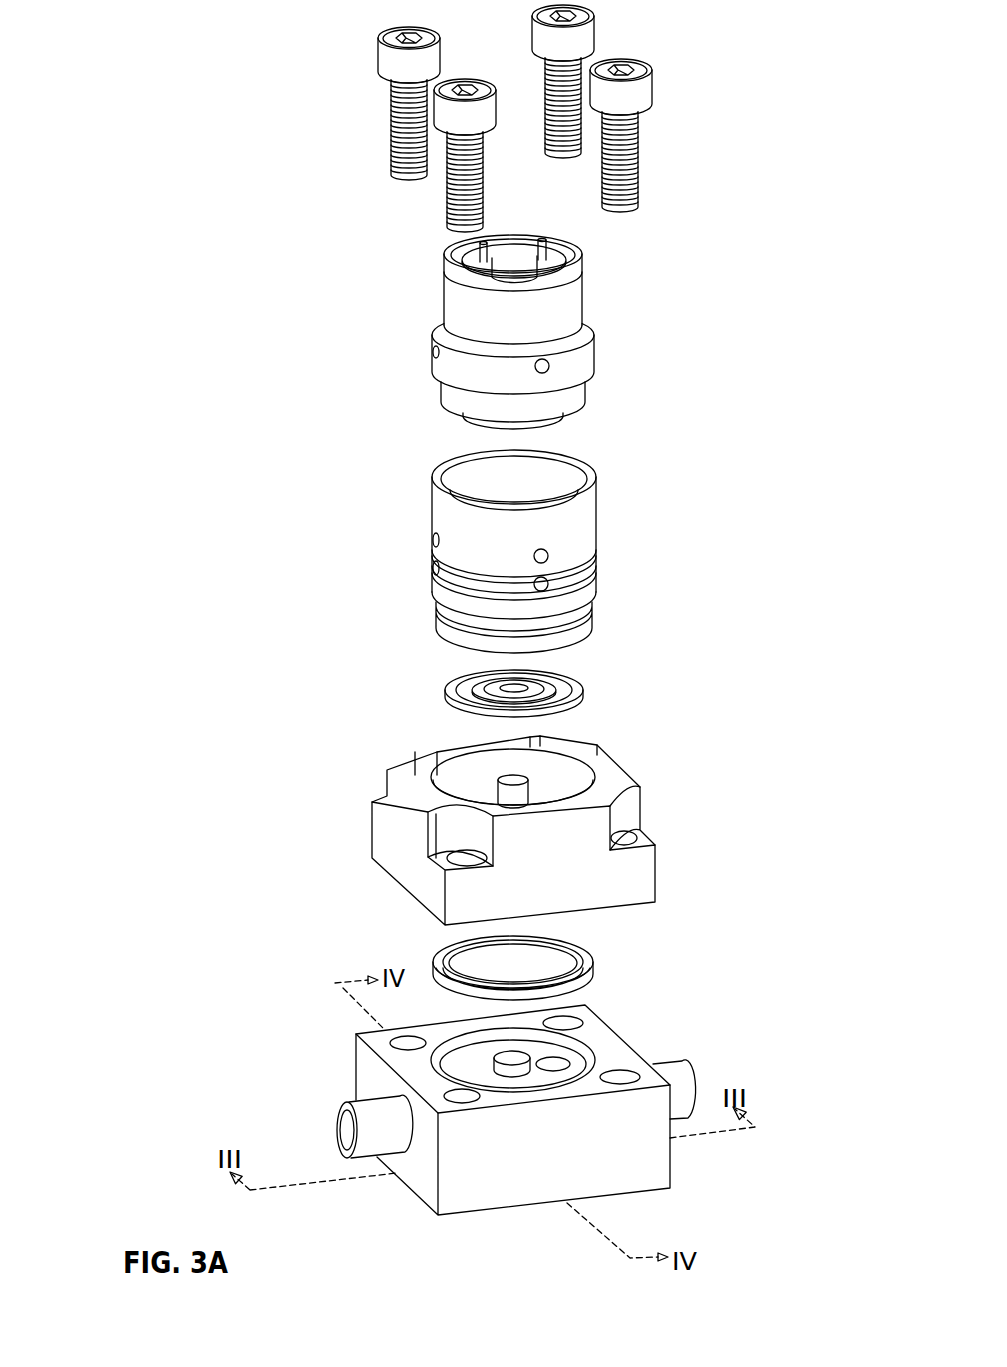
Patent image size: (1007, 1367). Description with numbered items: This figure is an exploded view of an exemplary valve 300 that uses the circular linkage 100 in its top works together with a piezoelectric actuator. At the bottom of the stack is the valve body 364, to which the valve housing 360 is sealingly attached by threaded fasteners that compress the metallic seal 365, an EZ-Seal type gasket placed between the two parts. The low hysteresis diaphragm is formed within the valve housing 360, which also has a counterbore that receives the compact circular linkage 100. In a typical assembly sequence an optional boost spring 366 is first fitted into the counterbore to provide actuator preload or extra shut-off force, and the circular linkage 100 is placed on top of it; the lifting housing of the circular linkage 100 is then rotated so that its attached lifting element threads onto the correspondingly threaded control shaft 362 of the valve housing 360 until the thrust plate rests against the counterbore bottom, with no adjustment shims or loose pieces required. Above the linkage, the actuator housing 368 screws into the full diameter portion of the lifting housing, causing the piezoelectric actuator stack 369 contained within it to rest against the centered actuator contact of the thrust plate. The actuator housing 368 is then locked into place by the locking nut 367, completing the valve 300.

The valve 300 is at (377, 610).
The piezoelectric actuator stack 369 is at (515, 135).
The actuator housing 368 is at (465, 289).
The locking nut 367 is at (471, 376).
The circular linkage 100 is at (465, 551).
The boost spring 366 is at (462, 689).
The control shaft 362 is at (415, 772).
The valve housing 360 is at (474, 830).
The metallic seal 365 is at (560, 968).
The valve body 364 is at (474, 1110).